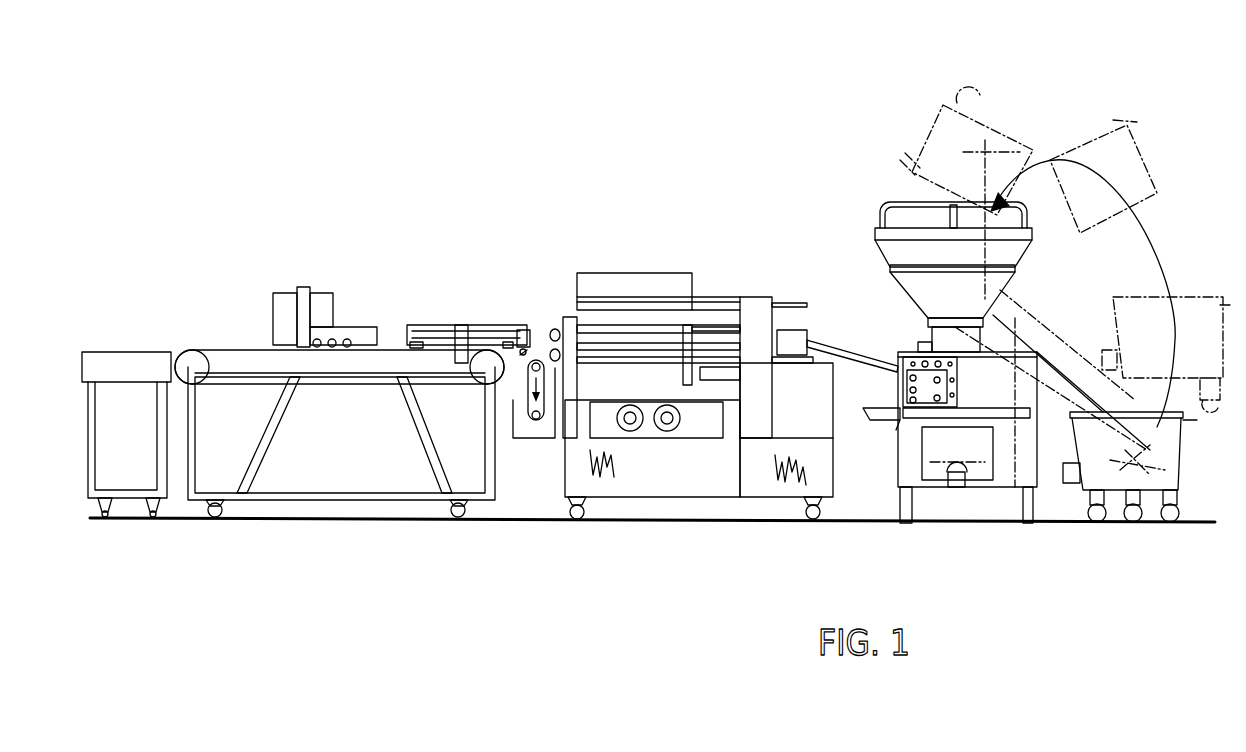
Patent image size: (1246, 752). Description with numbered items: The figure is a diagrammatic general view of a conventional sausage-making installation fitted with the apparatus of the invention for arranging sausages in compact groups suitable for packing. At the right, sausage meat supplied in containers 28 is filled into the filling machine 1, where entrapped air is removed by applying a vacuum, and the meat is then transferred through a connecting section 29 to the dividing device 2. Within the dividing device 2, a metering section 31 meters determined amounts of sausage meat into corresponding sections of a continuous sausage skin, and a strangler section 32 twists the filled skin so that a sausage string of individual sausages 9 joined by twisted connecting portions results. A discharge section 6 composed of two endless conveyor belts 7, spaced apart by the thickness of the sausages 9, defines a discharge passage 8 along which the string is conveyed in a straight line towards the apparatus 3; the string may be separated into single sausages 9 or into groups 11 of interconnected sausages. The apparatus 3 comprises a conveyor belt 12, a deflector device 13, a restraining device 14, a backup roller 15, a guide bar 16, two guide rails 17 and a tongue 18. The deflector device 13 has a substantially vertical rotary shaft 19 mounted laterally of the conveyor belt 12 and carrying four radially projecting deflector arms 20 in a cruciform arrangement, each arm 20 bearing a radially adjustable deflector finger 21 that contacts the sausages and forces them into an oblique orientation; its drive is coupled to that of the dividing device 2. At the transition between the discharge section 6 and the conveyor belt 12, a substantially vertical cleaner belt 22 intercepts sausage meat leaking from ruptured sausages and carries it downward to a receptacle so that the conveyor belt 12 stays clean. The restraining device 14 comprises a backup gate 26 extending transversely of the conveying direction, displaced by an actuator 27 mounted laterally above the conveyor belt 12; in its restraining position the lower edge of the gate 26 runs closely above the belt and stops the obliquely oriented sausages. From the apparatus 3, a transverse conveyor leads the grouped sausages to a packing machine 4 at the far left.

The filling machine 1 is at (1020, 126).
The dividing device 2 is at (730, 322).
The apparatus for arranging sausages in compact groups 3 is at (404, 248).
The packing machine 4 is at (136, 368).
The discharge section 6 is at (545, 349).
The endless conveyor belts 7 is at (657, 337).
The discharge passage 8 is at (637, 343).
The sausages 9 is at (317, 347).
The groups of interconnected sausages 11 is at (332, 347).
The conveyor belt 12 is at (220, 350).
The deflector device 13 is at (480, 349).
The restraining device 14 is at (310, 349).
The backup roller 15 is at (527, 357).
The guide bar 16 is at (442, 332).
The guide rails 17 is at (369, 330).
The tongue 18 is at (347, 347).
The rotary shaft 19 is at (518, 337).
The deflector arms 20 is at (472, 340).
The deflector finger 21 is at (403, 338).
The cleaner belt 22 is at (533, 420).
The backup gate 26 is at (307, 307).
The actuator 27 is at (287, 303).
The containers 28 is at (1190, 378).
The connecting section 29 is at (848, 357).
The metering section 31 is at (788, 340).
The strangler section 32 is at (660, 357).